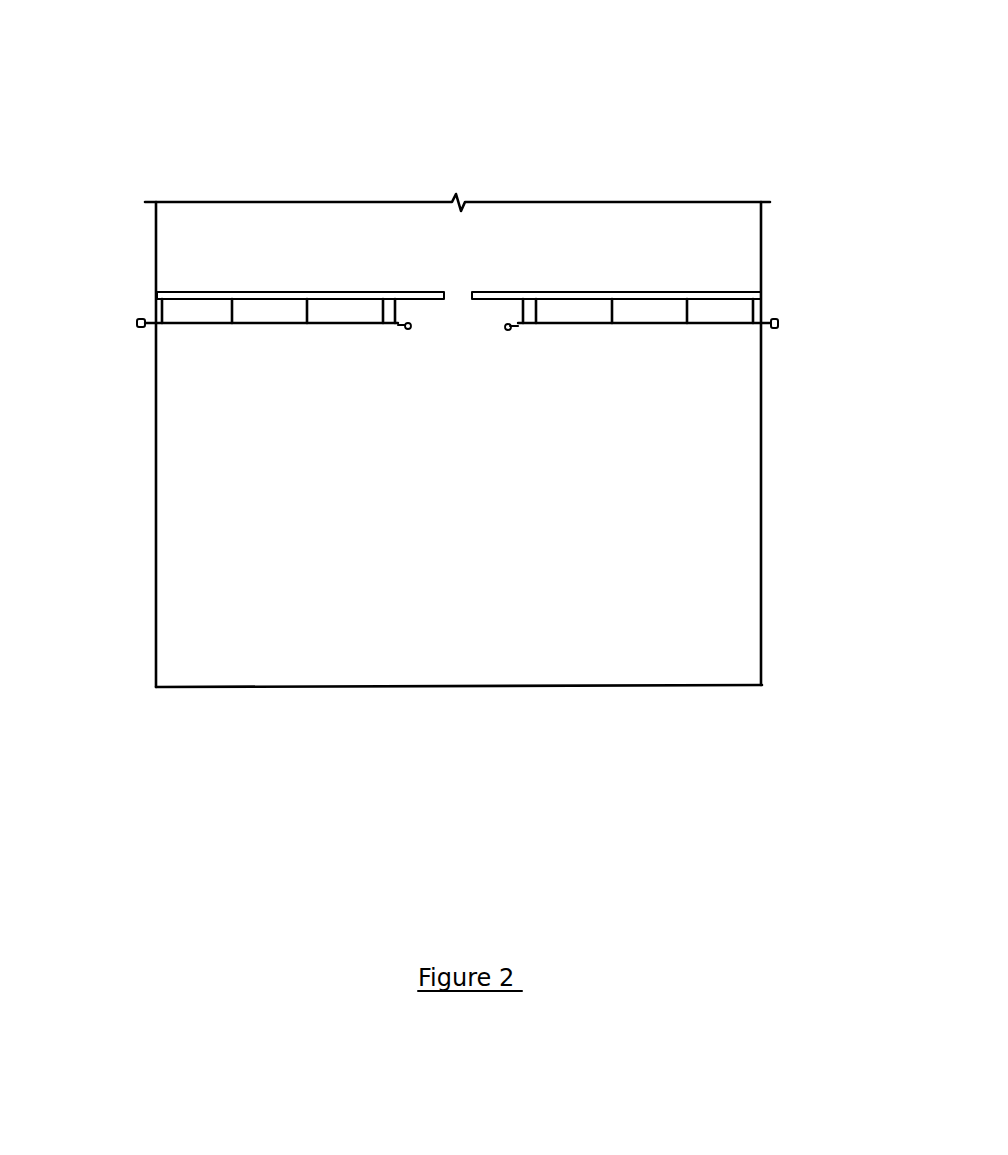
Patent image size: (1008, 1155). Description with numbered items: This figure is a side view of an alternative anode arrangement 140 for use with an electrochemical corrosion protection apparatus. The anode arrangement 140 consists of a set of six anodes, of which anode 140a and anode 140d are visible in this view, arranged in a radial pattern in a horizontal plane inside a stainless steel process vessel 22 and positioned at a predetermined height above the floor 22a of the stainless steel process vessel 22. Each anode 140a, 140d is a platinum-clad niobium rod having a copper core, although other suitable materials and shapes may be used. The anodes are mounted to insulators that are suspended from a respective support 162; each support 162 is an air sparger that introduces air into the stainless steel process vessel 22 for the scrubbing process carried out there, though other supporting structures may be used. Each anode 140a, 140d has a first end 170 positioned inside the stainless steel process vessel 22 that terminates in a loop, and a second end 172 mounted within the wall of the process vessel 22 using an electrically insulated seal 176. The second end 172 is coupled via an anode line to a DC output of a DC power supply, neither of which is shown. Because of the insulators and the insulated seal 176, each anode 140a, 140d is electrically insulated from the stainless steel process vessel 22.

The stainless steel process vessel 22 is at (156, 240).
The floor 22a is at (210, 674).
The anode arrangement 140 is at (752, 125).
The anode 140a is at (246, 370).
The anode 140d is at (674, 298).
The support 162 is at (723, 292).
The first end 170 is at (512, 358).
The second end 172 is at (146, 312).
The electrically insulated seal 176 is at (149, 330).